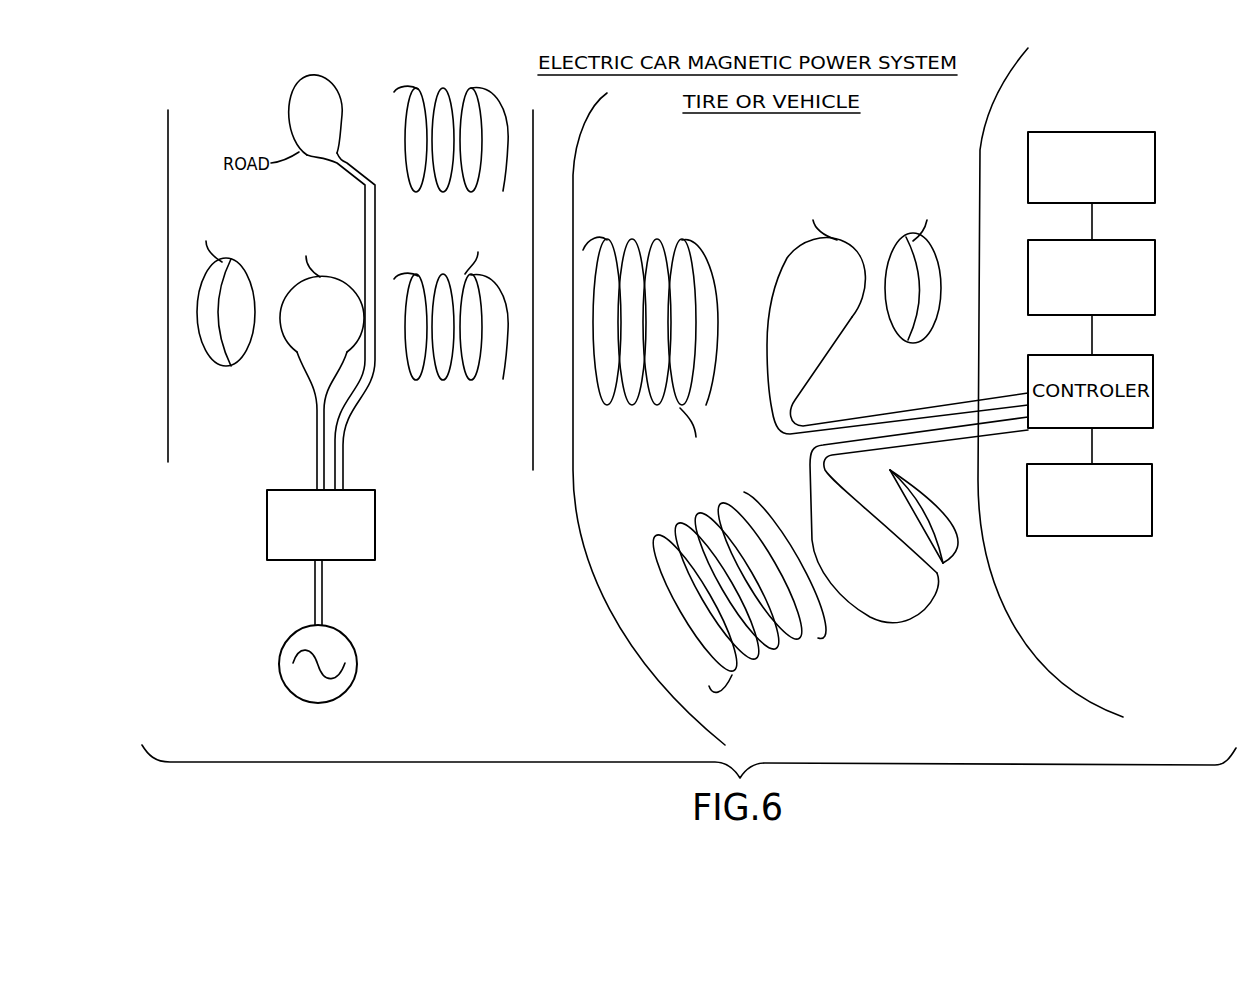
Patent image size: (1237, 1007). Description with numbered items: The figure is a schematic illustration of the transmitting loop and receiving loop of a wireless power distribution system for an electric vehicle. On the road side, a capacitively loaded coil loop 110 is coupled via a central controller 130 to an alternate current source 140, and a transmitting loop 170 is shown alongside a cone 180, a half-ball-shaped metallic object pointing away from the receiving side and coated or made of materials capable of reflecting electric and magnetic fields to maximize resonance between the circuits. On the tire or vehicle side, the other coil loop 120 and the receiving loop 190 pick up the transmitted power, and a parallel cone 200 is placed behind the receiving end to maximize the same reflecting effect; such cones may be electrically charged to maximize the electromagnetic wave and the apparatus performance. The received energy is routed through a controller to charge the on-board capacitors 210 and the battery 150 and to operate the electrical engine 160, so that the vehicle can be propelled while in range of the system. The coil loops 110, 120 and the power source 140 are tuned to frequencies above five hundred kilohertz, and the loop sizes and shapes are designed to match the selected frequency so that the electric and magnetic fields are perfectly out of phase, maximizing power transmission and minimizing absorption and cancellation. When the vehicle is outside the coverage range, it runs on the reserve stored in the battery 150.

The coil loop 110 is at (409, 192).
The coil loop 120 is at (627, 408).
The central controller 130 is at (375, 545).
The alternate current source 140 is at (350, 680).
The battery 150 is at (1155, 295).
The electrical engine 160 is at (1152, 515).
The transmitting loop 170 is at (301, 345).
The cone 180 is at (210, 365).
The receiving loop 190 is at (845, 330).
The parallel cone 200 is at (923, 333).
The on-board capacitors 210 is at (1155, 185).